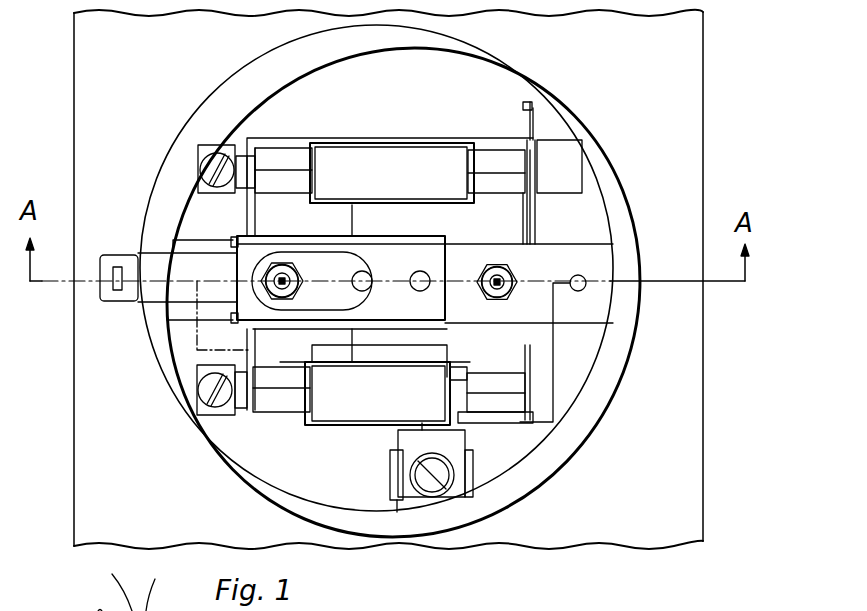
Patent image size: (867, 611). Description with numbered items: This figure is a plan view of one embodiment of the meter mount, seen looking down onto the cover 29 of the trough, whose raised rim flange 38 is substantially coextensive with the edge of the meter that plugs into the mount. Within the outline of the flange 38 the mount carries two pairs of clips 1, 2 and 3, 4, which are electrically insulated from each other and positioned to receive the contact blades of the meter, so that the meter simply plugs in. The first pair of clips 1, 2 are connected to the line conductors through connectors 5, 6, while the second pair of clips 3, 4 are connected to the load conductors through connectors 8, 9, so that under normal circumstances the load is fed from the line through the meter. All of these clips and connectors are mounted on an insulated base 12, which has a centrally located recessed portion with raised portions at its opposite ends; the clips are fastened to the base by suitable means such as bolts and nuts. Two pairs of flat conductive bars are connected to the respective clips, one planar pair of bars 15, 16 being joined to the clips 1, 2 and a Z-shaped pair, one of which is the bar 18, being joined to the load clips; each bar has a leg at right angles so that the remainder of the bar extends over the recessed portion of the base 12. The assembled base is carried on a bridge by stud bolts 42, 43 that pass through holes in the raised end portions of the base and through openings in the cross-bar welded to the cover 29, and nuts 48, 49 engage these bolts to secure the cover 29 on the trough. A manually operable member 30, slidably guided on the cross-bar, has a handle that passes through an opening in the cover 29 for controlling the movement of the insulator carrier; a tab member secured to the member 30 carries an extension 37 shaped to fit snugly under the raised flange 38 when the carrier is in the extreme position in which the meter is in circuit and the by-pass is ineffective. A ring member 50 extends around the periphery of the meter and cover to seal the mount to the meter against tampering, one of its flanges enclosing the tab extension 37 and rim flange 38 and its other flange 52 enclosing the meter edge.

The clip 1 is at (510, 163).
The clip 2 is at (493, 405).
The clip 3 is at (277, 157).
The clip 4 is at (263, 400).
The connector 5 is at (453, 430).
The connector 6 is at (535, 124).
The connector 8 is at (211, 161).
The connector 9 is at (205, 383).
The insulated base 12 is at (430, 166).
The flat conductive bar 15 is at (505, 226).
The flat conductive bar 16 is at (505, 350).
The Z-shaped conductive bar 18 is at (273, 342).
The cover 29 is at (647, 475).
The manually operable member 30 is at (122, 262).
The extension 37 is at (161, 585).
The flange 38 is at (573, 435).
The stud bolt 42 is at (274, 281).
The stud bolt 43 is at (504, 283).
The nut 48 is at (268, 268).
The nut 49 is at (507, 270).
The ring member 50 is at (88, 601).
The flange 52 is at (110, 580).